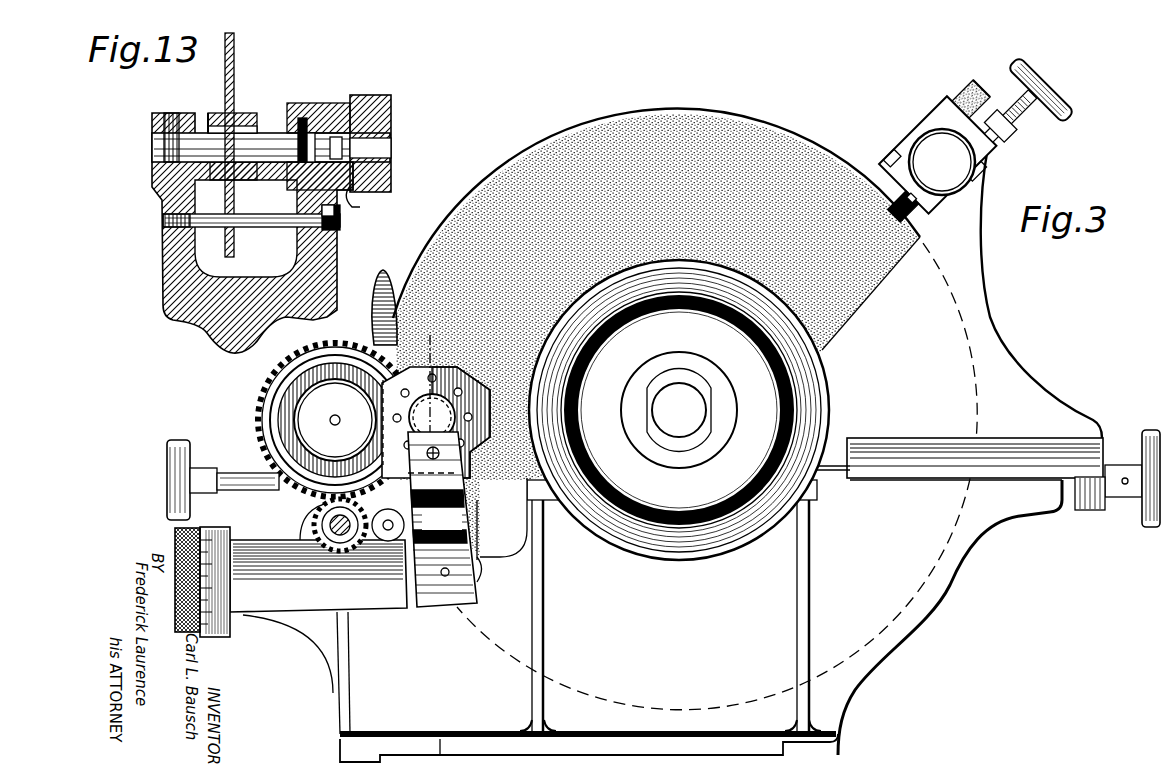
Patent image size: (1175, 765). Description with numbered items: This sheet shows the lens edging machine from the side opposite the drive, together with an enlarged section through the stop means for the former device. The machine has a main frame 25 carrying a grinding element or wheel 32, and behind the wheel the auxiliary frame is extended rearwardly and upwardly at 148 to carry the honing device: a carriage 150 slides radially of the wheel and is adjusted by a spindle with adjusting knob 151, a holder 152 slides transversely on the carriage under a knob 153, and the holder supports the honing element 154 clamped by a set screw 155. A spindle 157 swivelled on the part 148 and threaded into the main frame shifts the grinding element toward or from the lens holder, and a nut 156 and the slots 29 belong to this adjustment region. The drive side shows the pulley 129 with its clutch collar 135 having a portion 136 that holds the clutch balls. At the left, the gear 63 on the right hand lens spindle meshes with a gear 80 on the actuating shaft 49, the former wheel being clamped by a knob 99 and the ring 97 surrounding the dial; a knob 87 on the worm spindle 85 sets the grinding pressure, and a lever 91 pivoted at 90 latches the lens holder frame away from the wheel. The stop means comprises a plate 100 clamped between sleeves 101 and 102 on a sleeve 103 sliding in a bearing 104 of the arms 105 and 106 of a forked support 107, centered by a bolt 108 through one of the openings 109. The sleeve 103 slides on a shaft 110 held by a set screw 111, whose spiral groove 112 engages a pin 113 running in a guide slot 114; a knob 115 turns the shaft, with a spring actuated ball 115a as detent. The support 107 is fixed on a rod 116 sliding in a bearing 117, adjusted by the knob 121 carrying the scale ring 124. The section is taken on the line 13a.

In FIG. 3, the grinding element or wheel 32 is at (800, 135).
In FIG. 3, the main frame 25 is at (938, 572).
In FIG. 3, the spindle 157 is at (1122, 462).
In FIG. 3, the nut 156 is at (1092, 512).
In FIG. 3, the rearward and upward extension of auxiliary frames 148 is at (983, 287).
In FIG. 3, the carriage 150 is at (985, 157).
In FIG. 3, the knob 153 is at (960, 170).
In FIG. 3, the holder 152 is at (945, 112).
In FIG. 3, the honing element 154 is at (975, 82).
In FIG. 3, the adjusting knob 151 is at (1050, 92).
In FIG. 3, the set screw 155 is at (890, 118).
In FIG. 3, the pulley 129 is at (824, 390).
In FIG. 3, the collar 135 is at (713, 365).
In FIG. 3, the portion of collar 136 is at (682, 405).
In FIG. 3, the lever 91 is at (386, 290).
In FIG. 3, the gear 63 is at (262, 385).
In FIG. 3, the ring 97 is at (270, 448).
In FIG. 3, the knob 99 is at (292, 418).
In FIG. 3, the slots 29 is at (336, 425).
In FIG. 3, the finger piece or knob 87 is at (167, 485).
In FIG. 3, the spindle 85 is at (255, 490).
In FIG. 3, the bearing 117 is at (330, 594).
In FIG. 3, the ring 124 is at (208, 637).
In FIG. 3, the hand piece or knob 121 is at (175, 530).
In FIG. 3, the gear 80 is at (322, 513).
In FIG. 3, the actuating shaft 49 is at (330, 528).
In FIG. 3, the pivot 90 is at (388, 541).
In FIG. 3, the plate 100 is at (452, 372).
In FIG. 13, the plate 100 is at (234, 50).
In FIG. 3, the knob 115 is at (445, 400).
In FIG. 13, the knob 115 is at (395, 90).
In FIG. 3, the openings 109 is at (436, 373).
In FIG. 13, the openings 109 is at (210, 112).
In FIG. 3, the section line 13a is at (400, 343).
In FIG. 3, the bolt 108 is at (440, 454).
In FIG. 13, the bolt 108 is at (285, 228).
In FIG. 3, the arm 105 is at (455, 478).
In FIG. 13, the arm 105 is at (340, 226).
In FIG. 3, the forked support 107 is at (470, 512).
In FIG. 13, the forked support 107 is at (225, 335).
In FIG. 3, the rod 116 is at (480, 577).
In FIG. 13, the arm 106 is at (165, 185).
In FIG. 13, the bearing 104 is at (285, 182).
In FIG. 13, the sleeve 103 is at (268, 131).
In FIG. 13, the sleeve 101 is at (240, 112).
In FIG. 13, the sleeve 102 is at (212, 112).
In FIG. 13, the set screw 111 is at (170, 113).
In FIG. 13, the shaft 110 is at (325, 118).
In FIG. 13, the spiral groove 112 is at (300, 100).
In FIG. 13, the guide slot 114 is at (311, 131).
In FIG. 13, the pin 113 is at (336, 100).
In FIG. 13, the spring actuated ball 115a is at (360, 207).